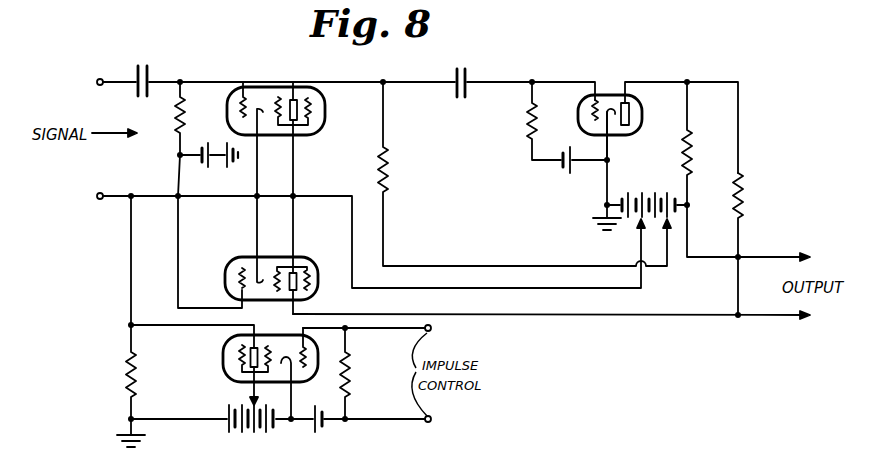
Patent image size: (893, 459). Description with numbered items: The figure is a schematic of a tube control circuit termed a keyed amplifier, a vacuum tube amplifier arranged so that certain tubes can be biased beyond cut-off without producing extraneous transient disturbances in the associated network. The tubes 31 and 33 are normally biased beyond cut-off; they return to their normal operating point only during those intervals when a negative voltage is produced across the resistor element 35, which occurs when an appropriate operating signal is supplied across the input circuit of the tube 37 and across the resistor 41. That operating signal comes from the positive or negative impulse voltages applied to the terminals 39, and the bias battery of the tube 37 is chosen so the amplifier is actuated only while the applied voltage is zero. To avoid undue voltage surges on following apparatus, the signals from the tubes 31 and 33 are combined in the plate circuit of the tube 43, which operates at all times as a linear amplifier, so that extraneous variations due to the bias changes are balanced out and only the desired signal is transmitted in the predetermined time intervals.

The tube 31 is at (256, 87).
The tube 33 is at (238, 257).
The resistor element 35 is at (122, 374).
The tube 37 is at (223, 361).
The terminals 39 is at (432, 329).
The resistor 41 is at (352, 381).
The tube 43 is at (609, 95).